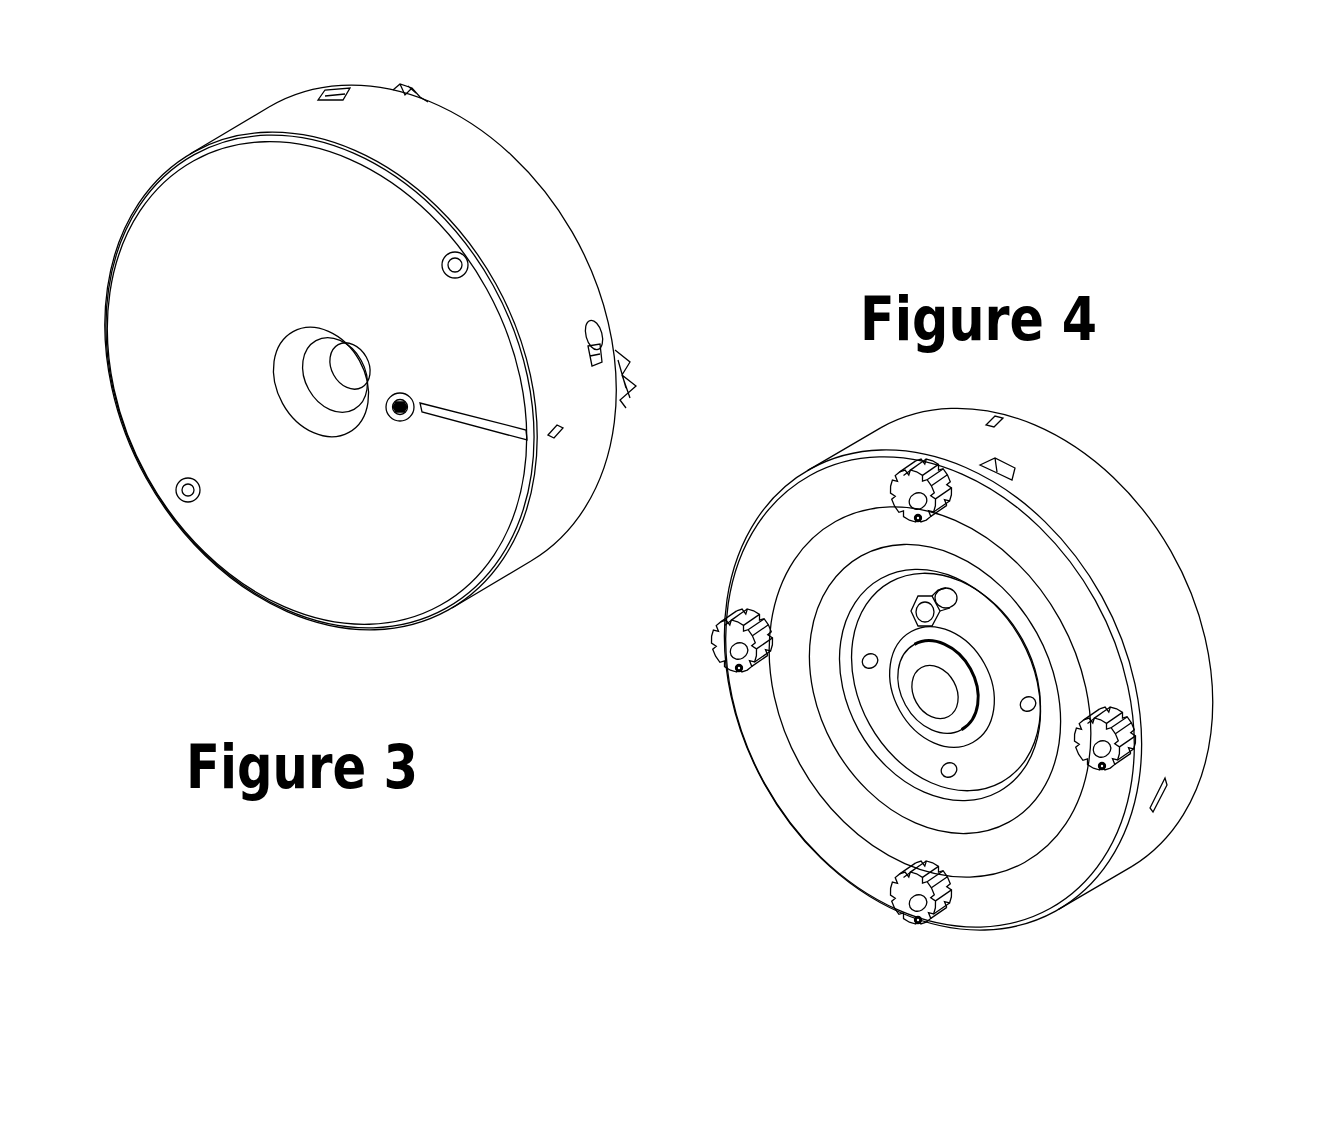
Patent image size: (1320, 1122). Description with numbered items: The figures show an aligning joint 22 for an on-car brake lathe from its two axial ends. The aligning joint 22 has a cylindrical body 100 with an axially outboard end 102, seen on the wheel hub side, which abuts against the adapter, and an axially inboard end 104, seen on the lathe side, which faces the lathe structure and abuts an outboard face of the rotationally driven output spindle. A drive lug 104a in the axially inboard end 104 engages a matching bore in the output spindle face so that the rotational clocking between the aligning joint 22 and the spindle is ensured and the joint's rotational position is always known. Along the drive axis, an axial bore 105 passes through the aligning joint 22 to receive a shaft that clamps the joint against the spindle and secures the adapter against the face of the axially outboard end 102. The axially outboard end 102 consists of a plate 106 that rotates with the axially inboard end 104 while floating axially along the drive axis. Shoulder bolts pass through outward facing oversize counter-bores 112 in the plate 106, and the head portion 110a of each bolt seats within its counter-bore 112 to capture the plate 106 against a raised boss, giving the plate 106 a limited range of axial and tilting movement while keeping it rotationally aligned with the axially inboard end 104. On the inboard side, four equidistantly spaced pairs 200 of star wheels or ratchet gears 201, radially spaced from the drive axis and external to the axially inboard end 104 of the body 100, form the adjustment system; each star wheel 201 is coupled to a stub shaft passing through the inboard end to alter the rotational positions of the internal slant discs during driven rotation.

In FIG. 3, the aligning joint 22 is at (238, 112).
In FIG. 4, the aligning joint 22 is at (806, 892).
In FIG. 3, the cylindrical body 100 is at (538, 280).
In FIG. 3, the axially outboard end 102 is at (520, 592).
In FIG. 4, the axially inboard end 104 is at (925, 763).
In FIG. 4, the drive lug 104a is at (940, 592).
In FIG. 3, the axial bore 105 is at (347, 390).
In FIG. 4, the axial bore 105 is at (942, 688).
In FIG. 3, the plate 106 is at (342, 270).
In FIG. 3, the head portion 110a is at (460, 267).
In FIG. 3, the oversize counter-bore 112 is at (467, 287).
In FIG. 4, the pair of star wheels or ratchet gears 200 is at (904, 672).
In FIG. 4, the star wheel or ratchet gear 201 is at (855, 460).